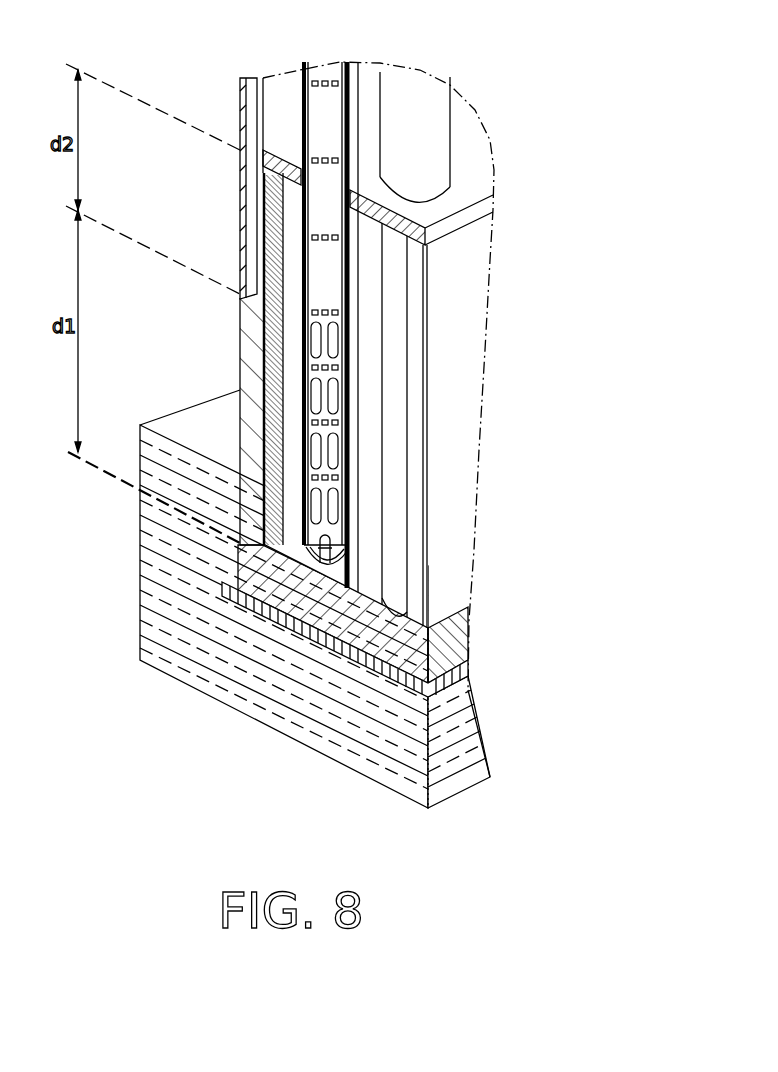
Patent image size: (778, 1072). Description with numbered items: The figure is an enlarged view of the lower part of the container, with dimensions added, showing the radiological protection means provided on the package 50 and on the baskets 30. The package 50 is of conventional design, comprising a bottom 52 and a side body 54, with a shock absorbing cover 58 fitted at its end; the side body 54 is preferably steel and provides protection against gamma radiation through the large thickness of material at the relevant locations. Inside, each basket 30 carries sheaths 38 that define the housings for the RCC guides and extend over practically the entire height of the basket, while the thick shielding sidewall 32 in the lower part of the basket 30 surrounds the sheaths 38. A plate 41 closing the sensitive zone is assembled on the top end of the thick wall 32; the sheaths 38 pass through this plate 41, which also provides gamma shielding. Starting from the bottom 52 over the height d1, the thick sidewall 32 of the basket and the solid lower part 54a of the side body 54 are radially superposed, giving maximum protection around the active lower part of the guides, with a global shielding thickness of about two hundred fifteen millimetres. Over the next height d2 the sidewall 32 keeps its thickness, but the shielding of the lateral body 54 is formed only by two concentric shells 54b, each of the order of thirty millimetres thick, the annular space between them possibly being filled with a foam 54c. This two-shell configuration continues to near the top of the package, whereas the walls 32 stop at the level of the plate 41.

The basket 30 is at (452, 402).
The shielding sidewall 32 is at (249, 379).
The sheath 38 is at (410, 108).
The plate closing the sensitive zone 41 is at (458, 172).
The package 50 is at (188, 692).
The bottom 52 is at (408, 645).
The side body 54 is at (236, 104).
The solid lower part 54a is at (249, 340).
The concentric shells 54b is at (280, 186).
The foam 54c is at (250, 131).
The shock absorbing cover 58 is at (152, 594).